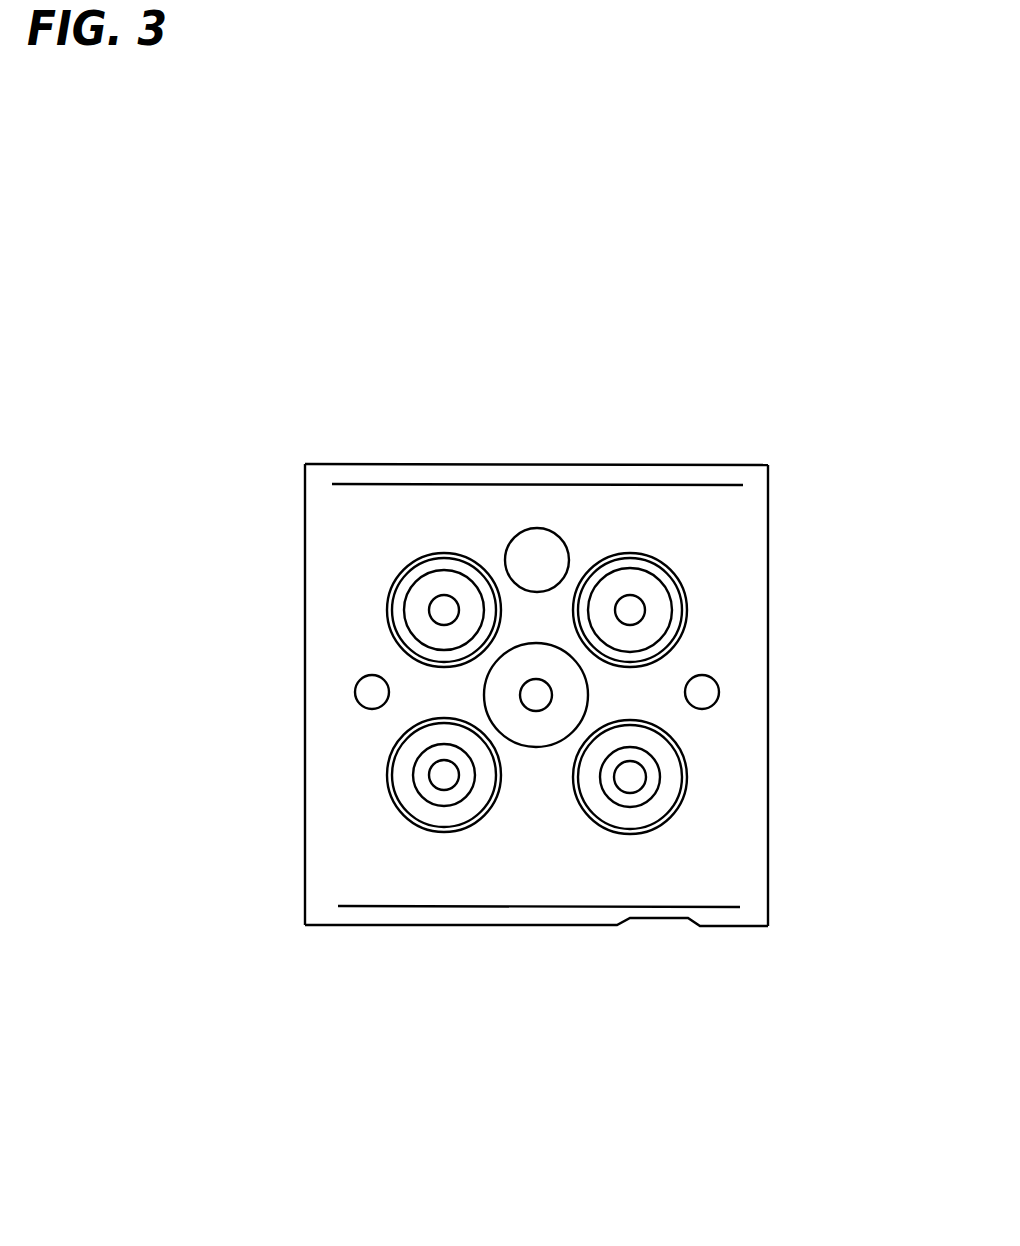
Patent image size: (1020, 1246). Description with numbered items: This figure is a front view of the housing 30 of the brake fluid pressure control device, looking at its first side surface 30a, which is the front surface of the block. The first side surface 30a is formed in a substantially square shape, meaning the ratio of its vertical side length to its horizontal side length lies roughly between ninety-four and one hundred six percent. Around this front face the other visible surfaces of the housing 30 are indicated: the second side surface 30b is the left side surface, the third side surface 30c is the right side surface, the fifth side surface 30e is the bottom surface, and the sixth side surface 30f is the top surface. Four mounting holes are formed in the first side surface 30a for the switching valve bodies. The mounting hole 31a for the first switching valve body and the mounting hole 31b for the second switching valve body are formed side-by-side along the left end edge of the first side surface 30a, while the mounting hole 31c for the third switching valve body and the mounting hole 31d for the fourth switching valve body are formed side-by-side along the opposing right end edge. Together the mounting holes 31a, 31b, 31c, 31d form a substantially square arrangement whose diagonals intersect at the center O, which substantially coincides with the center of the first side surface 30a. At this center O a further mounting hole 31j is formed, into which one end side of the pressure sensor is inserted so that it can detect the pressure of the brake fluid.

The housing 30 is at (360, 322).
The first side surface 30a is at (335, 663).
The second side surface 30b is at (303, 845).
The third side surface 30c is at (768, 845).
The fifth side surface 30e is at (623, 925).
The sixth side surface 30f is at (447, 465).
The mounting hole 31a is at (423, 594).
The mounting hole 31b is at (444, 790).
The mounting hole 31c is at (650, 598).
The mounting hole 31d is at (663, 775).
The mounting hole 31j is at (548, 728).
The center O is at (536, 697).